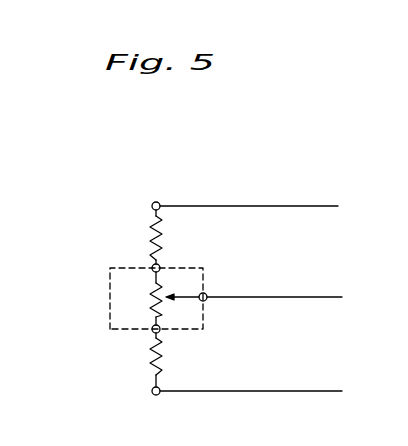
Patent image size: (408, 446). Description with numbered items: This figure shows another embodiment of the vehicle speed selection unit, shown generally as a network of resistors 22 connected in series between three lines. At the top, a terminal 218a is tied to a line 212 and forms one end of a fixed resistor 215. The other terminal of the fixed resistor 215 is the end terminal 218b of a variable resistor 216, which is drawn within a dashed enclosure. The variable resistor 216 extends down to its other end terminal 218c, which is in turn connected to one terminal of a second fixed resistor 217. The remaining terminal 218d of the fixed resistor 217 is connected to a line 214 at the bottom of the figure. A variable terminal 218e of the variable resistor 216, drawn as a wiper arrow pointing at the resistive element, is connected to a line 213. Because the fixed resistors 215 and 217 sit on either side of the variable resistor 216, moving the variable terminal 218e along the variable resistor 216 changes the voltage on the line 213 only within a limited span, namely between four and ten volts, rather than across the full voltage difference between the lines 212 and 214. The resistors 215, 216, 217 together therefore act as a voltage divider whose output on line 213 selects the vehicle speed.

The resistor network 22 is at (138, 194).
The line 212 is at (258, 203).
The line 213 is at (287, 295).
The line 214 is at (297, 388).
The fixed resistor 215 is at (162, 236).
The variable resistor 216 is at (110, 284).
The fixed resistor 217 is at (162, 362).
The terminal 218a is at (160, 201).
The end terminal 218b is at (152, 265).
The end terminal 218c is at (152, 333).
The terminal 218d is at (152, 395).
The variable terminal 218e is at (206, 301).